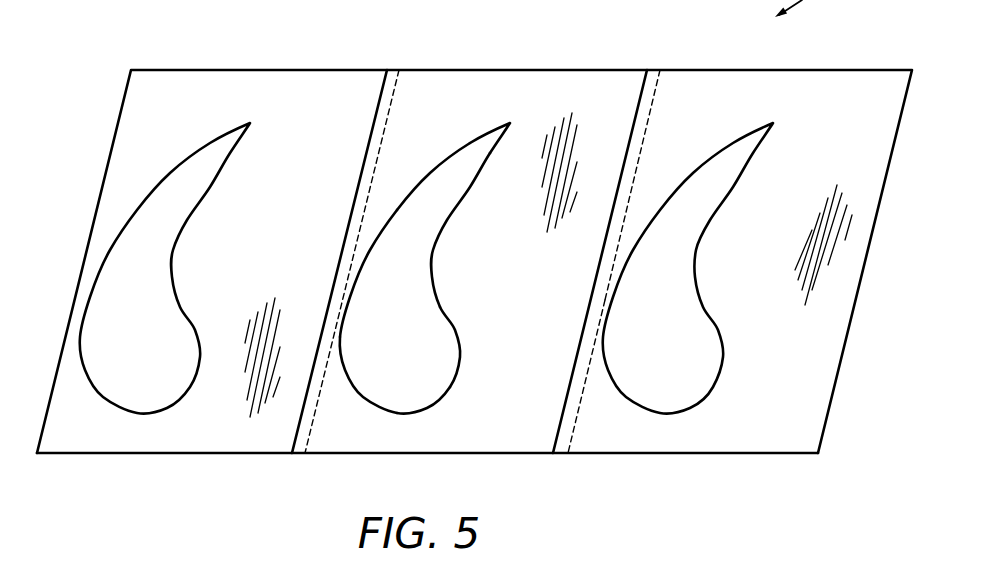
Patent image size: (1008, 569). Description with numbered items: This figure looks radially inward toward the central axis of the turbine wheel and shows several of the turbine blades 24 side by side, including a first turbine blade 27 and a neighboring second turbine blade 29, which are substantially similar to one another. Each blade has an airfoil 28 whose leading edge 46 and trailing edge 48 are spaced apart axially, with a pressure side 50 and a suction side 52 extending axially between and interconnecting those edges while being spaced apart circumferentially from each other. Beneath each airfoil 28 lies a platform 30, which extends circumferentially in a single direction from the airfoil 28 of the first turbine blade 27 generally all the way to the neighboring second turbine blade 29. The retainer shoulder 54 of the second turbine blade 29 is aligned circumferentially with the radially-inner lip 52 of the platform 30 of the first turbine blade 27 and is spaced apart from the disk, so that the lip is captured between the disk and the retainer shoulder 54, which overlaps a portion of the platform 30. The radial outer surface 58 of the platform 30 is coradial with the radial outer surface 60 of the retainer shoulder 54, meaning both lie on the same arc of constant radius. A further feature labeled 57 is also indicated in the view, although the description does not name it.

The turbine blades 24 is at (375, 232).
The first turbine blade 27 is at (459, 225).
The airfoil 28 is at (360, 393).
The second turbine blade 29 is at (719, 298).
The platform 30 is at (860, 170).
The leading edge 46 is at (418, 413).
The trailing edge 48 is at (509, 123).
The pressure side 50 is at (457, 331).
The radially-inner lip 52 is at (429, 180).
The retainer shoulder 54 is at (392, 77).
The coating region 57 is at (584, 90).
The radial outer surface of platform 58 is at (670, 437).
The radial outer surface of retainer shoulder 60 is at (567, 440).